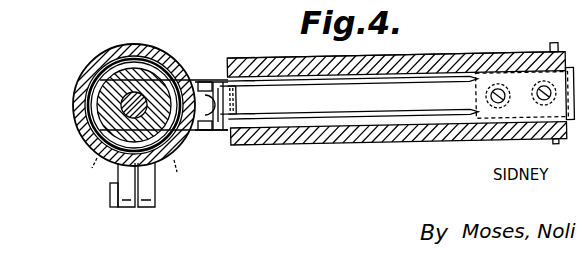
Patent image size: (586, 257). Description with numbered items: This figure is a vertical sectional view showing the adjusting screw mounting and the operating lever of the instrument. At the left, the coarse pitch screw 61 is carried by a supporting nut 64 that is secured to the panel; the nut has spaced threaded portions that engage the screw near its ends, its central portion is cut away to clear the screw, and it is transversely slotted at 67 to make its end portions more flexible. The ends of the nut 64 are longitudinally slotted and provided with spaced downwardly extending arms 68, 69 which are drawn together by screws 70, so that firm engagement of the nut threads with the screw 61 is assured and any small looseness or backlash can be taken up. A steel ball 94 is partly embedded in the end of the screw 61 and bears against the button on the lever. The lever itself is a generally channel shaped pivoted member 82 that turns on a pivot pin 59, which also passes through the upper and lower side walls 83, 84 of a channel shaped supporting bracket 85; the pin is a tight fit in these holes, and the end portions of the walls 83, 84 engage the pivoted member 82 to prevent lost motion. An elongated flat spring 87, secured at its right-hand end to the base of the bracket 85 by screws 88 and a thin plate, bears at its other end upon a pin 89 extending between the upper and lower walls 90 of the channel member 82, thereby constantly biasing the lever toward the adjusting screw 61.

The pivot pin 59 is at (551, 51).
The coarse pitch screw 61 is at (100, 72).
The supporting nut 64 is at (77, 116).
The transverse slot 67 is at (129, 177).
The downwardly extending arm 68 is at (130, 208).
The downwardly extending arm 69 is at (148, 208).
The screw 70 is at (110, 202).
The pivoted member 82 is at (224, 78).
The upper side wall 83 is at (437, 62).
The lower side wall 84 is at (440, 143).
The supporting bracket 85 is at (305, 58).
The flat spring 87 is at (318, 111).
The screw 88 is at (544, 106).
The pin 89 is at (227, 109).
The upper and lower walls 90 is at (208, 81).
The steel ball 94 is at (146, 80).